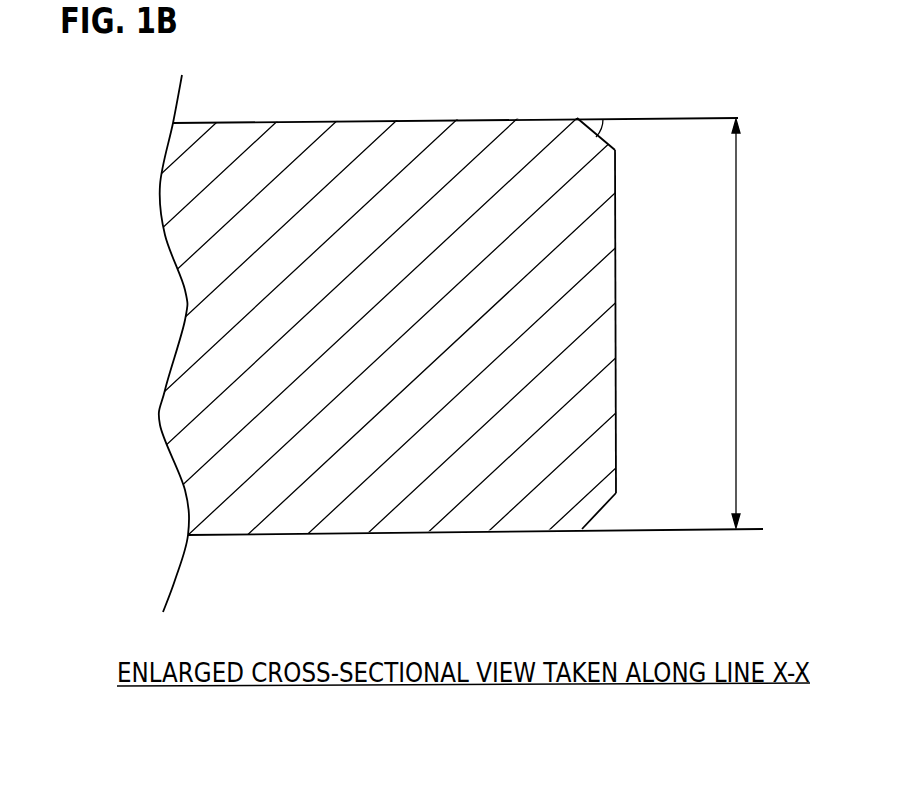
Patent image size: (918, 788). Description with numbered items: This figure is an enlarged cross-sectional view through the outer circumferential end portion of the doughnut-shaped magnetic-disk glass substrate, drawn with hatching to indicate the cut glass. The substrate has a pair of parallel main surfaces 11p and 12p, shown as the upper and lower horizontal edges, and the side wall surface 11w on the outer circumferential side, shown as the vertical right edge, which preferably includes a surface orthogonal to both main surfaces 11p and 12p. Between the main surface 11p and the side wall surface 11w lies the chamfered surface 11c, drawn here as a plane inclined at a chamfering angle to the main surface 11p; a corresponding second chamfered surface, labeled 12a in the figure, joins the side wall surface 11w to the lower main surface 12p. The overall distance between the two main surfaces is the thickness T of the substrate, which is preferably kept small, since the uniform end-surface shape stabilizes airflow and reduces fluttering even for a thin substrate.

The main surface 11p is at (370, 122).
The main surface 12p is at (372, 535).
The chamfered surface 11c is at (612, 147).
The side wall surface 11w is at (616, 310).
The bottom chamfer edge 12a is at (608, 505).
The thickness T is at (742, 323).